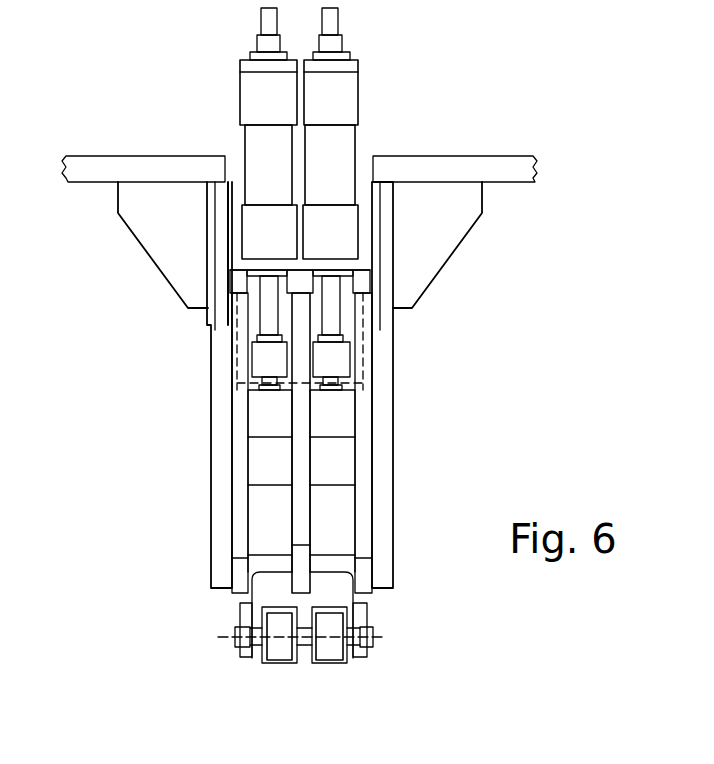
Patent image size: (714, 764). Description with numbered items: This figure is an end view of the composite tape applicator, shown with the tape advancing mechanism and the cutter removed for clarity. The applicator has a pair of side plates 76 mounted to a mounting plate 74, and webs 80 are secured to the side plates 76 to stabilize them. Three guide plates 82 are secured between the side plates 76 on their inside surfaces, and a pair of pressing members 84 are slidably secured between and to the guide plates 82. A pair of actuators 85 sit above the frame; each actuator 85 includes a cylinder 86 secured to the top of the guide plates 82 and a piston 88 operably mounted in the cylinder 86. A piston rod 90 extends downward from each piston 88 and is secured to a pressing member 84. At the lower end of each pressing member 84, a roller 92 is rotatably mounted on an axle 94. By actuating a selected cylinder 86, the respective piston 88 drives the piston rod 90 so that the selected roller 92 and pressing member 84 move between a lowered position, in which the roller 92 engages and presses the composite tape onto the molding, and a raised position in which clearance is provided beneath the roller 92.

The mounting plate 74 is at (100, 155).
The side plates 76 is at (210, 387).
The webs 80 is at (138, 245).
The guide plates 82 is at (238, 445).
The pressing members 84 is at (262, 478).
The actuators 85 is at (238, 90).
The cylinder 86 is at (245, 138).
The piston 88 is at (245, 245).
The piston rod 90 is at (268, 318).
The roller 92 is at (270, 662).
The axle 94 is at (233, 643).